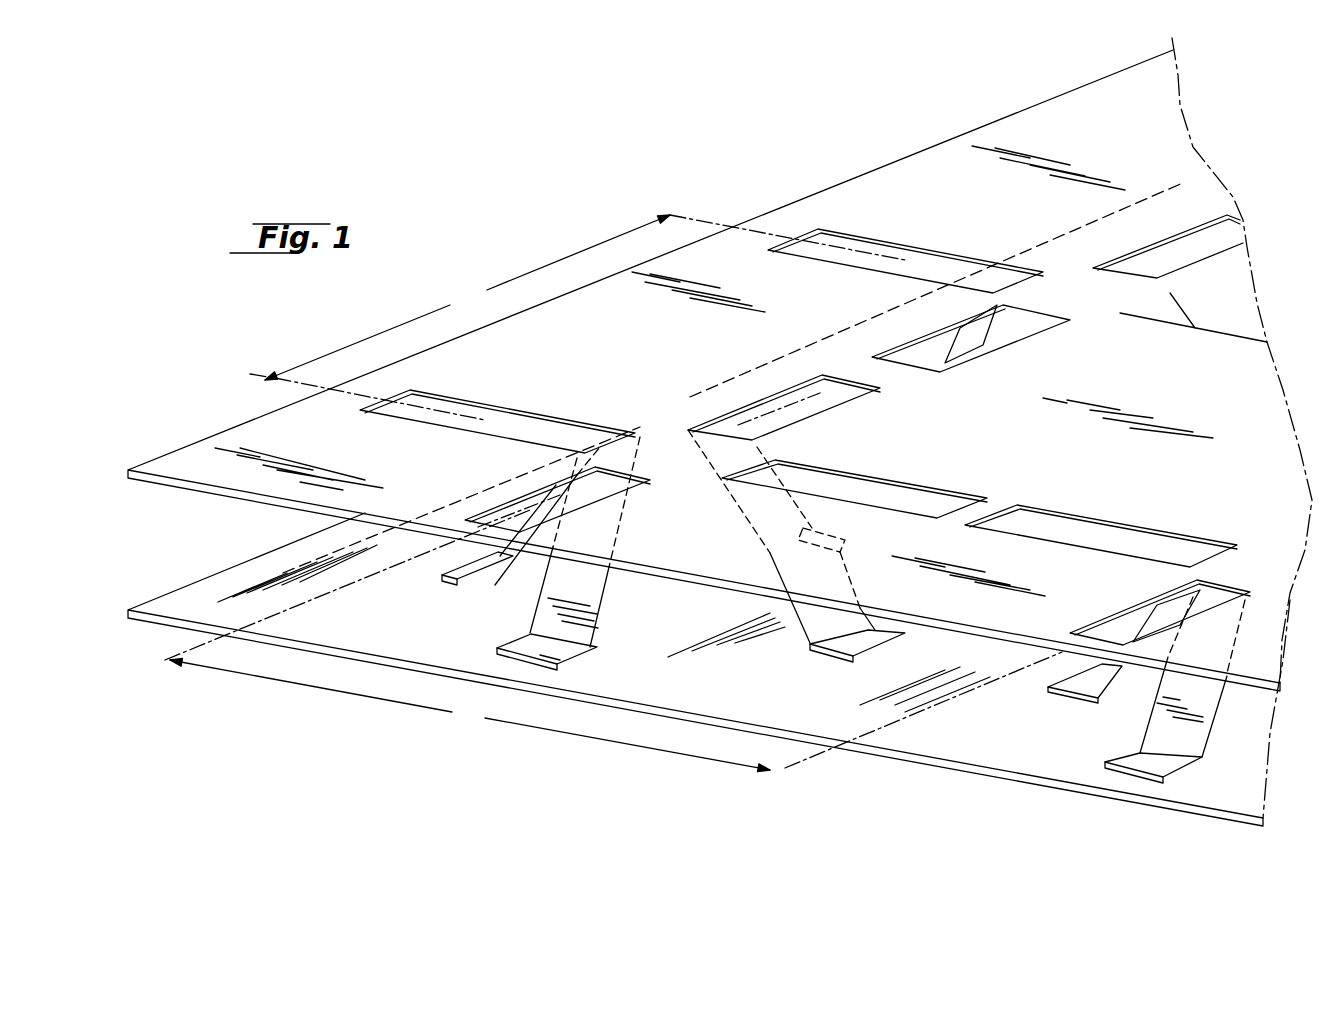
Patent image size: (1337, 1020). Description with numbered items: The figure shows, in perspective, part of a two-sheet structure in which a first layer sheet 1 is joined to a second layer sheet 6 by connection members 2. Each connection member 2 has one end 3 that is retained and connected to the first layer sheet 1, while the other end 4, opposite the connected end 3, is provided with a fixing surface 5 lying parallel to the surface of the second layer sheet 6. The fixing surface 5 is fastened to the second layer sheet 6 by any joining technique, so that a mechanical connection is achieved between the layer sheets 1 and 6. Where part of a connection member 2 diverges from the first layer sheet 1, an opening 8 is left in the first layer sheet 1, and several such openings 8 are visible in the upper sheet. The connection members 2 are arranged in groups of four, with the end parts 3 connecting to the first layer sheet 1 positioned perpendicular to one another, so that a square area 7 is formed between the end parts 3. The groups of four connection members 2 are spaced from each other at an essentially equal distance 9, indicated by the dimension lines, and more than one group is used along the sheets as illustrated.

The first layer sheet 1 is at (205, 435).
The connection member 2 is at (530, 560).
The end of connection member 3 is at (618, 440).
The other end of connection member 4 is at (500, 652).
The fixing surface 5 is at (548, 657).
The second layer sheet 6 is at (205, 572).
The square area 7 is at (655, 462).
The opening 8 is at (500, 420).
The distance 9 is at (613, 493).